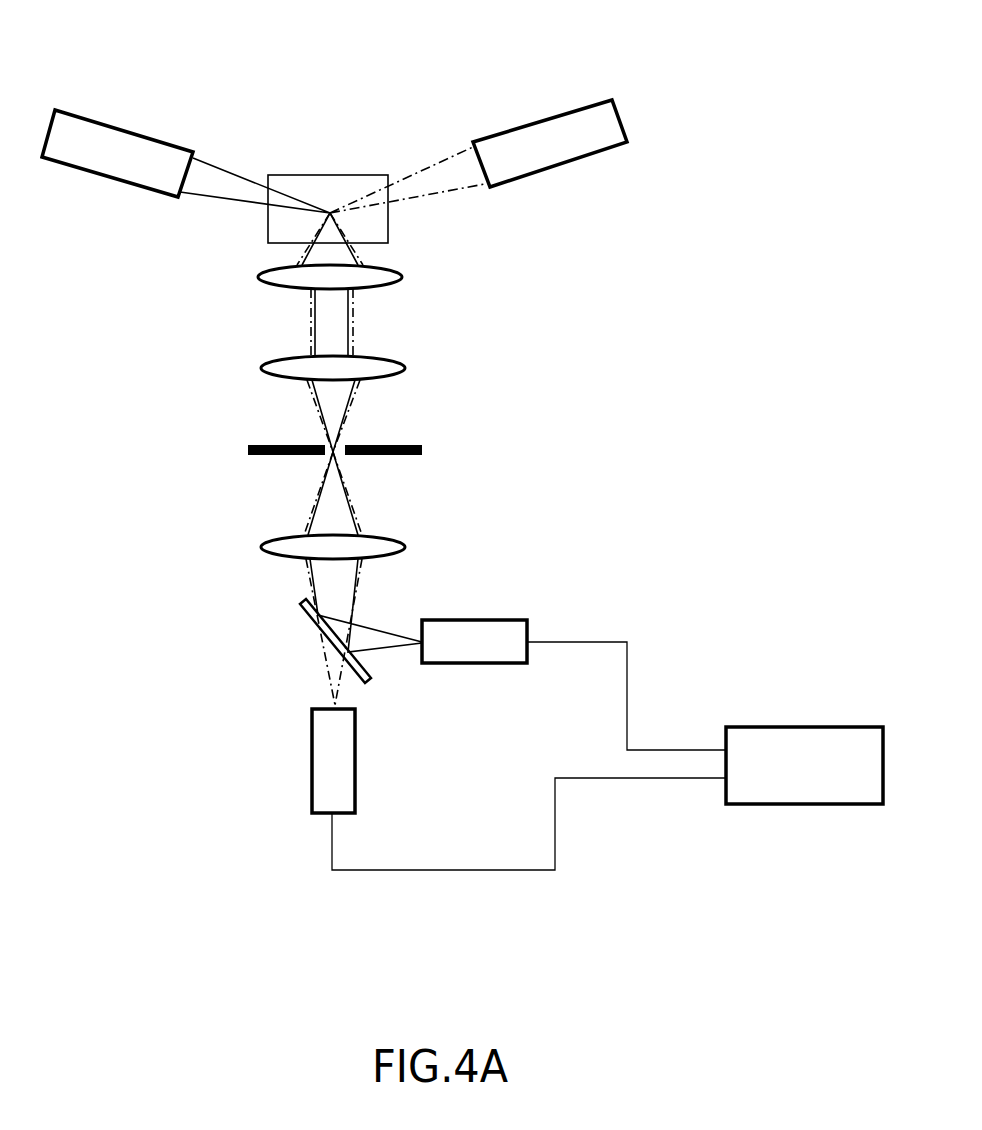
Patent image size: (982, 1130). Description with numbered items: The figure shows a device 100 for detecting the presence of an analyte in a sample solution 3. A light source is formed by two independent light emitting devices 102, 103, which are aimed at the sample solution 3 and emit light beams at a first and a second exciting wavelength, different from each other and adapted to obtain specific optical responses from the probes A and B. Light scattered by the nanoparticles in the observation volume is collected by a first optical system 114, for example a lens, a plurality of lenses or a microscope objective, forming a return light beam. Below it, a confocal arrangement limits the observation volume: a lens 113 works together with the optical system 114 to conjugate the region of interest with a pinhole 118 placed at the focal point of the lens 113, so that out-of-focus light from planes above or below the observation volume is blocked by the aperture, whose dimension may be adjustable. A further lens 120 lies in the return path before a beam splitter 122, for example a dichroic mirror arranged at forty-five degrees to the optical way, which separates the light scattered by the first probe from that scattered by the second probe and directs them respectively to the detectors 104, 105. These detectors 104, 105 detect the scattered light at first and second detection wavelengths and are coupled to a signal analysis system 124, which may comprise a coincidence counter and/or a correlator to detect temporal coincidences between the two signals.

The sample solution 3 is at (315, 176).
The device for detecting the presence of an analyte 100 is at (740, 391).
The light emitting device 102 is at (118, 127).
The light emitting device 103 is at (550, 117).
The detector 104 is at (468, 620).
The detector 105 is at (312, 766).
The lens 113 is at (410, 368).
The first optical system 114 is at (410, 277).
The pinhole 118 is at (245, 449).
The third lens 120 is at (262, 545).
The beam splitter 122 is at (295, 612).
The signal analysis system 124 is at (765, 727).